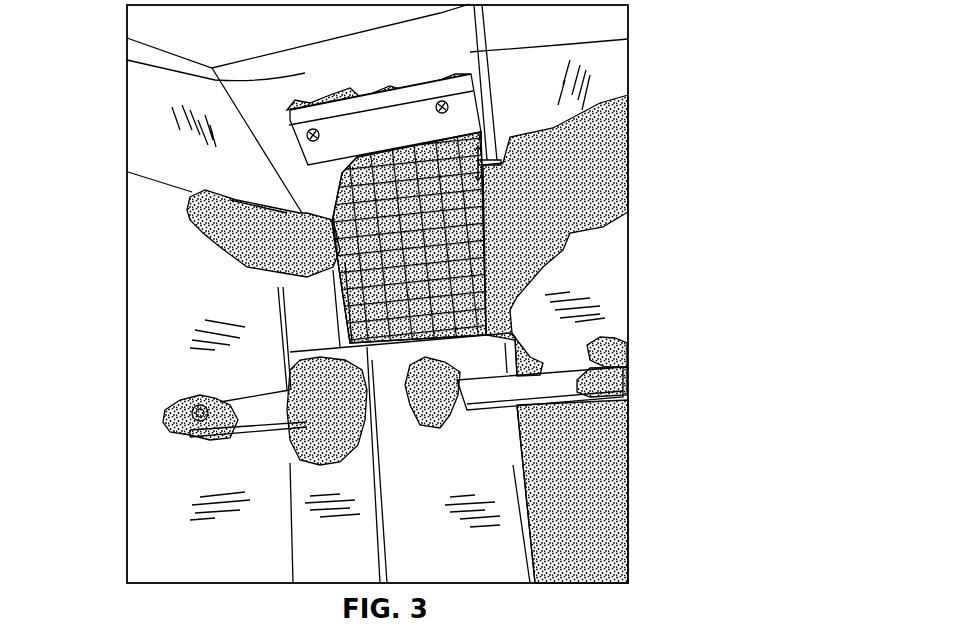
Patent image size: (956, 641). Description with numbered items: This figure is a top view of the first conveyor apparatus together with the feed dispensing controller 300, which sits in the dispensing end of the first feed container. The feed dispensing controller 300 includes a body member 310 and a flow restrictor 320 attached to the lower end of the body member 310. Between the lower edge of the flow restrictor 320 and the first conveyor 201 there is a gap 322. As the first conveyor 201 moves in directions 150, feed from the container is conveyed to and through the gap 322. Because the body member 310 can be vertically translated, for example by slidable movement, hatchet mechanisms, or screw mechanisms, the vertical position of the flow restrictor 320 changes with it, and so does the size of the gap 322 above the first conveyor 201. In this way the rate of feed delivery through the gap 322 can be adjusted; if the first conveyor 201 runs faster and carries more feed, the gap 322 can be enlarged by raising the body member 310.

The feed dispensing controller 300 is at (560, 43).
The body member 310 is at (200, 75).
The flow restrictor 320 is at (300, 146).
The gap 322 is at (312, 182).
The directions 150 is at (505, 162).
The first conveyor 201 is at (570, 215).